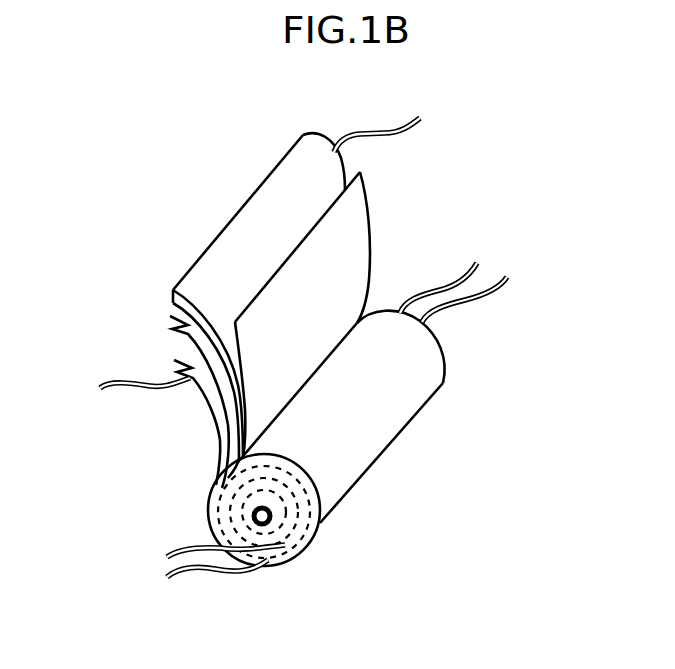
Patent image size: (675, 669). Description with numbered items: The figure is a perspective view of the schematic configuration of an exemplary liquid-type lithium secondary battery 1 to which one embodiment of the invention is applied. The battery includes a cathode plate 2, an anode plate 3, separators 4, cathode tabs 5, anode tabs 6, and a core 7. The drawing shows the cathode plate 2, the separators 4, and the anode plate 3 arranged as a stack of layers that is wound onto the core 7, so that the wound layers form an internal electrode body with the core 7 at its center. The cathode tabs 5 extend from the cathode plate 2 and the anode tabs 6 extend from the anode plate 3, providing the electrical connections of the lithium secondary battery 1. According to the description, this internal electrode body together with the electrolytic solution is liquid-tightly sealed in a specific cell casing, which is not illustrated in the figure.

The lithium secondary battery 1 is at (403, 456).
The cathode plate 2 is at (203, 407).
The anode plate 3 is at (247, 230).
The separators 4 is at (175, 323).
The cathode tabs 5 is at (115, 380).
The anode tabs 6 is at (382, 135).
The core 7 is at (269, 521).